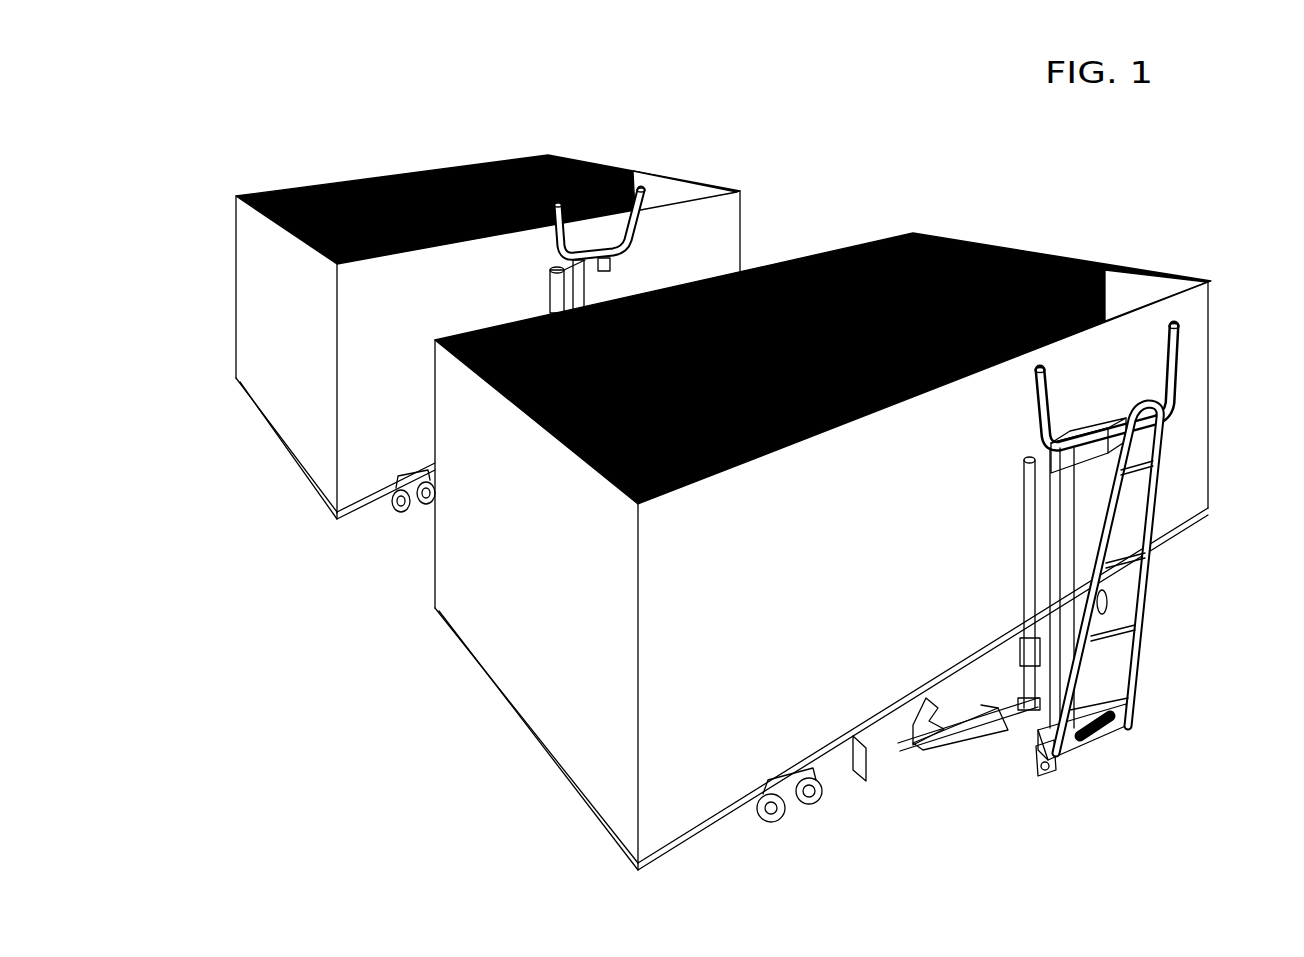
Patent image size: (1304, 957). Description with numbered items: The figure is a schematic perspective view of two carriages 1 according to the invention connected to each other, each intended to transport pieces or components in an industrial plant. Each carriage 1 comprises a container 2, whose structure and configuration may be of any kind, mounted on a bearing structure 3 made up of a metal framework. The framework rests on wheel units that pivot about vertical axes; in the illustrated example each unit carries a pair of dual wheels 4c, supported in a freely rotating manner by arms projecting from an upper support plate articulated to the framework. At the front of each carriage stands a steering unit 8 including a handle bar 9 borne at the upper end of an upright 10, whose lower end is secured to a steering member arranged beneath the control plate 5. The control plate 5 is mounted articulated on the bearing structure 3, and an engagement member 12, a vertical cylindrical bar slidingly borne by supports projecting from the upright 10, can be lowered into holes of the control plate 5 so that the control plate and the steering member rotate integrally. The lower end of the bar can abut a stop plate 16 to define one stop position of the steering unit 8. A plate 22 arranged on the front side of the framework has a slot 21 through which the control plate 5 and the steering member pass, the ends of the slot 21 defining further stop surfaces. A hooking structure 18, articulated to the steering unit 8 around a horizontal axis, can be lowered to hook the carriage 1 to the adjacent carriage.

The carriage 1 is at (657, 148).
The container 2 is at (240, 287).
The bearing structure 3 is at (508, 743).
The dual wheels 4c is at (420, 500).
The control plate 5 is at (990, 685).
The steering unit 8 is at (636, 256).
The handle bar 9 is at (1030, 402).
The upright 10 is at (1050, 555).
The engagement member 12 is at (1004, 513).
The stop plate 16 is at (986, 722).
The hooking structure 18 is at (1130, 582).
The slot 21 is at (905, 713).
The plate 22 is at (868, 740).